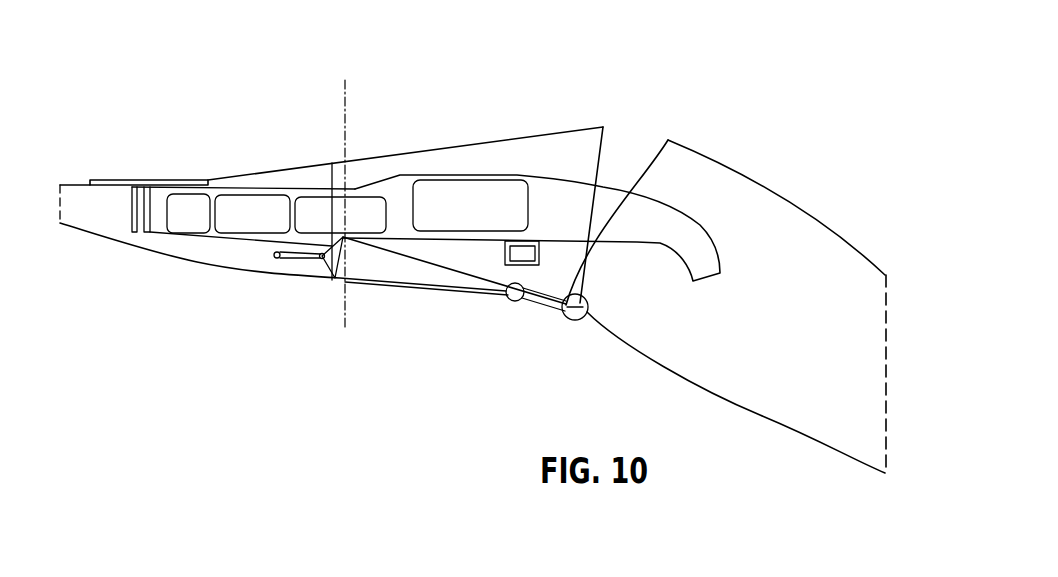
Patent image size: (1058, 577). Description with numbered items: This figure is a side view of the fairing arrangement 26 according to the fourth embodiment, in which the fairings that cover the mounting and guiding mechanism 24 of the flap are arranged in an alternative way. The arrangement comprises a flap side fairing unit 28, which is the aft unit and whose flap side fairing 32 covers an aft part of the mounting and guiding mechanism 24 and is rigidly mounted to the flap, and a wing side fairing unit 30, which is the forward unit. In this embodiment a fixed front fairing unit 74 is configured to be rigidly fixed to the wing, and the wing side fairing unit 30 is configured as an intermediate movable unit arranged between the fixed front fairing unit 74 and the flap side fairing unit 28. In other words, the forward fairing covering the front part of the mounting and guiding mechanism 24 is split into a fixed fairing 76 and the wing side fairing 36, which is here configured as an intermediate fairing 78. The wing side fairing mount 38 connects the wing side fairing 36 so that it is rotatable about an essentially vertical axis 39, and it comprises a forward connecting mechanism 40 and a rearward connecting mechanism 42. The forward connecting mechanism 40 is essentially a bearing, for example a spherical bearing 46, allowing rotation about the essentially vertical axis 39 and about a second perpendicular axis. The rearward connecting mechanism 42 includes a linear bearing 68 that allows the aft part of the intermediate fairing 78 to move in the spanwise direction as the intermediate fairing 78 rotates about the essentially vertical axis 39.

The mounting and guiding mechanism 24 is at (615, 197).
The fairing arrangement 26 is at (747, 128).
The flap side fairing unit 28 is at (813, 455).
The wing side fairing unit 30 is at (452, 310).
The flap side fairing 32 is at (807, 232).
The wing side fairing 36 is at (555, 140).
The wing side fairing mount 38 is at (345, 237).
The essentially vertical axis 39 is at (342, 127).
The forward connecting mechanism 40 is at (342, 252).
The rearward connecting mechanism 42 is at (532, 272).
The spherical bearing 46 is at (360, 222).
The linear bearing 68 is at (518, 266).
The fixed front fairing unit 74 is at (125, 250).
The fixed fairing 76 is at (198, 260).
The intermediate fairing 78 is at (512, 240).